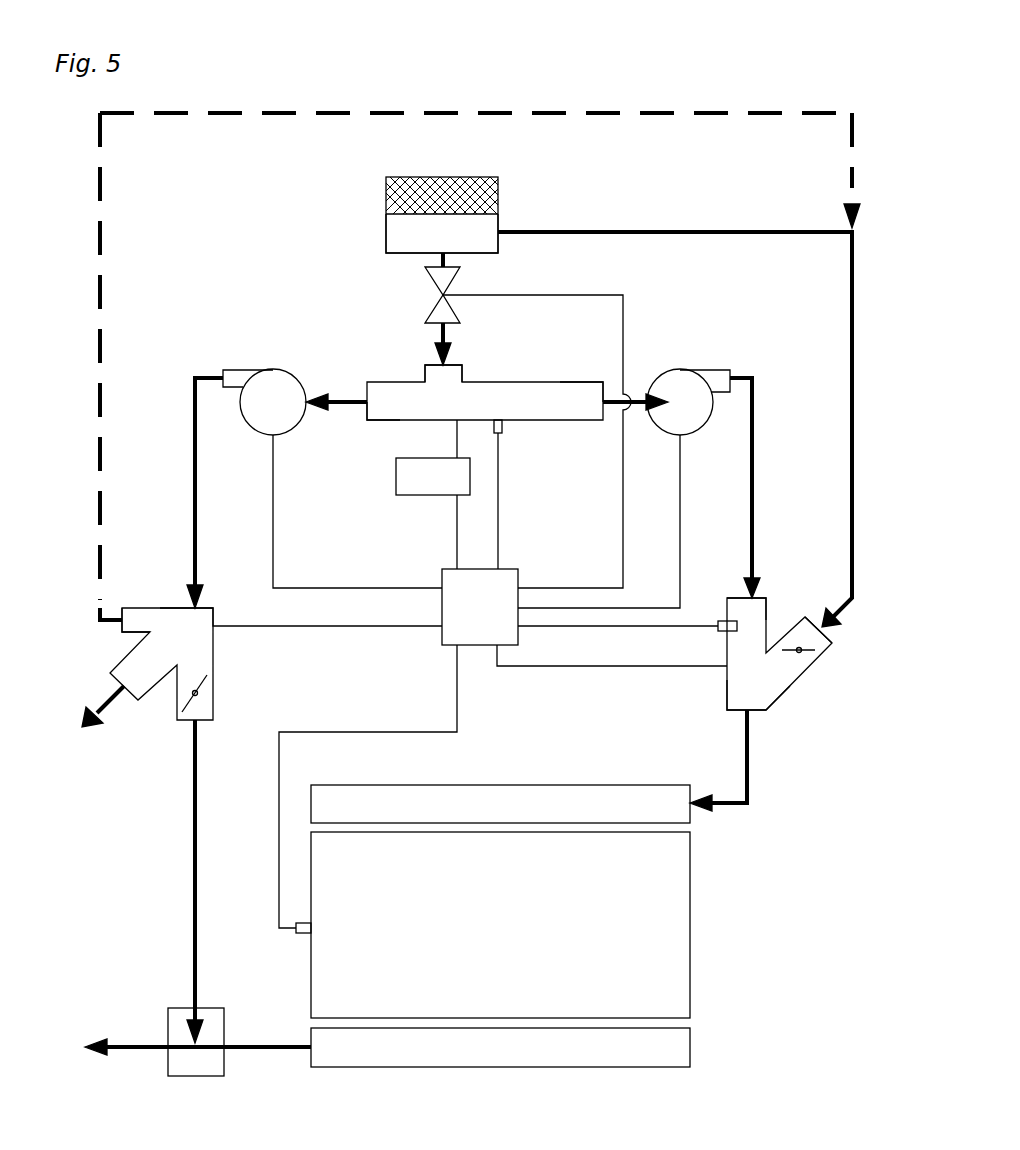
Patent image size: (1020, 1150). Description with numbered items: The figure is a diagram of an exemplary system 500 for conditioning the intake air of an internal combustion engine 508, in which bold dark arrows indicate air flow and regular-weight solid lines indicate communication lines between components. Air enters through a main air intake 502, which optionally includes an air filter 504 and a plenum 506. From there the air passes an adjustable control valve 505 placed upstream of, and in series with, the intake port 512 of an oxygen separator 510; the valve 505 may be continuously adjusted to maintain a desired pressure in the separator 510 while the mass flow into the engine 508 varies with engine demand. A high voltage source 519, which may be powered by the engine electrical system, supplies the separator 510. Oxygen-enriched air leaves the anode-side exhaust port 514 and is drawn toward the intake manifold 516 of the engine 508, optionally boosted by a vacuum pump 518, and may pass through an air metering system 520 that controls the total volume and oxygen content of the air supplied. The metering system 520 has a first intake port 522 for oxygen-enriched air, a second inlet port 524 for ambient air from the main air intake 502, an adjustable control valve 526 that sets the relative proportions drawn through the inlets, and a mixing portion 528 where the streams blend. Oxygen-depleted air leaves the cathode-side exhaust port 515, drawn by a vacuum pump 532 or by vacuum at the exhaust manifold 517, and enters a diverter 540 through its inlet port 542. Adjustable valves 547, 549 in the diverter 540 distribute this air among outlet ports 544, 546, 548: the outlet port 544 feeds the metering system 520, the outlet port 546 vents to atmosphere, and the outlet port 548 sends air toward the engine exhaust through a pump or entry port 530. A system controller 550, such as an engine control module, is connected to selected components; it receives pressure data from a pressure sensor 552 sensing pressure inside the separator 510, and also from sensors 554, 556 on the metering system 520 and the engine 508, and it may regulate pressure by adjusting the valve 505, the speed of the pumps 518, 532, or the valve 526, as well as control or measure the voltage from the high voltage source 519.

The system for conditioning intake air 500 is at (729, 54).
The main air intake 502 is at (445, 195).
The air filter 504 is at (408, 187).
The plenum 506 is at (413, 232).
The adjustable control valve 505 is at (440, 272).
The oxygen separator 510 is at (451, 391).
The intake port 512 is at (437, 363).
The anode-side exhaust port 514 is at (604, 382).
The cathode-side exhaust port 515 is at (366, 408).
The intake manifold 516 is at (462, 803).
The exhaust manifold 517 is at (500, 1067).
The vacuum pump 518 is at (680, 382).
The high voltage source 519 is at (433, 482).
The air metering system 520 is at (724, 680).
The first intake port 522 is at (758, 597).
The second inlet port 524 is at (833, 641).
The adjustable control valve 526 is at (805, 652).
The mixing portion 528 is at (748, 694).
The entry port 530 is at (172, 1008).
The vacuum pump 532 is at (278, 380).
The diverter 540 is at (239, 794).
The inlet port 542 is at (203, 604).
The outlet port 544 is at (120, 627).
The outlet port 546 is at (130, 700).
The adjustable valve 547 is at (148, 616).
The outlet port 548 is at (185, 722).
The adjustable valve 549 is at (200, 694).
The system controller 550 is at (503, 748).
The pressure sensor 552 is at (502, 428).
The sensor 554 is at (722, 632).
The sensor 556 is at (302, 933).
The internal combustion engine 508 is at (500, 925).